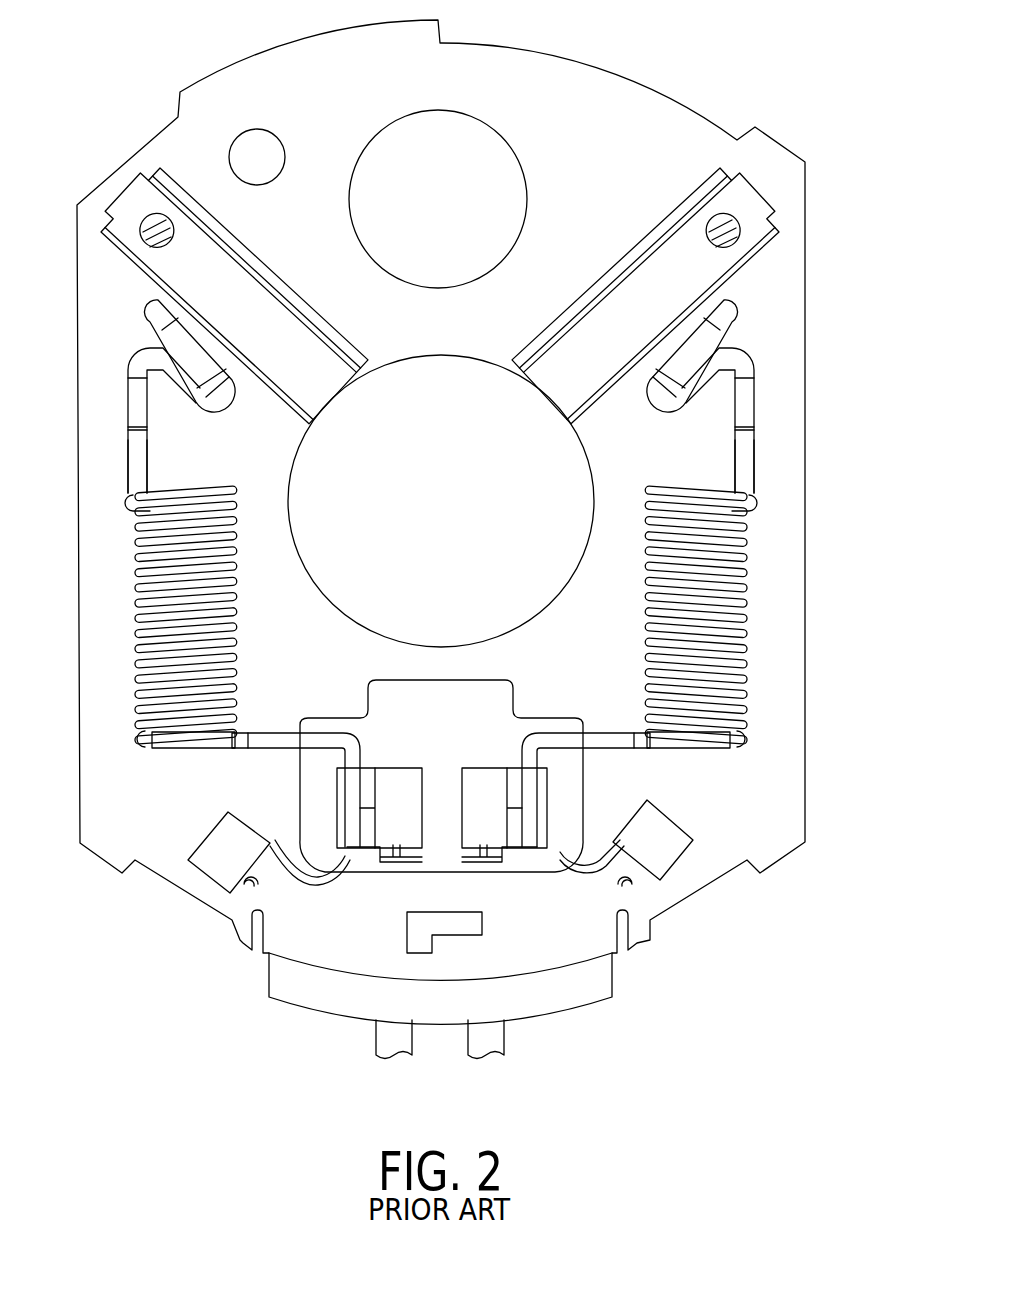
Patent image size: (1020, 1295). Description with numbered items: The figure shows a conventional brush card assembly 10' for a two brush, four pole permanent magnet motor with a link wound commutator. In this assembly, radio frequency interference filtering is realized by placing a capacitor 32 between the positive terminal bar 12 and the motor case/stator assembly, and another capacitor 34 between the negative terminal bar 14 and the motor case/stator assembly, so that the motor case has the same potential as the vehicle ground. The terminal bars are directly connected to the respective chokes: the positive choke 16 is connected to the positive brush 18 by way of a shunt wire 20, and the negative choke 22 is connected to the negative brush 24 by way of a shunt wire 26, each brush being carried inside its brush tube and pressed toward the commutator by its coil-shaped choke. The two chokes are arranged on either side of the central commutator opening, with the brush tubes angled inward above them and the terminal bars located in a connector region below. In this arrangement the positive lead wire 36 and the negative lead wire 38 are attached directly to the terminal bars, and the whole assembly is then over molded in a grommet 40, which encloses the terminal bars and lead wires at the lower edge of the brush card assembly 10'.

The brush card assembly 10' is at (441, 522).
The positive terminal bar 12 is at (510, 807).
The negative terminal bar 14 is at (370, 810).
The positive choke 16 is at (748, 547).
The positive brush 18 is at (765, 240).
The shunt wire 20 is at (753, 357).
The negative choke 22 is at (135, 600).
The negative brush 24 is at (142, 265).
The shunt wire 26 is at (128, 368).
The capacitor 32 is at (678, 873).
The capacitor 34 is at (204, 875).
The positive lead wire 36 is at (505, 1040).
The negative lead wire 38 is at (376, 1040).
The grommet 40 is at (613, 973).